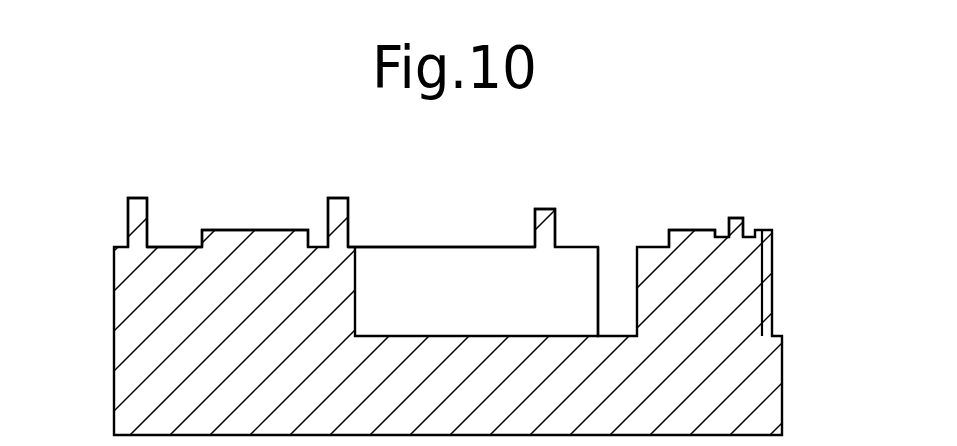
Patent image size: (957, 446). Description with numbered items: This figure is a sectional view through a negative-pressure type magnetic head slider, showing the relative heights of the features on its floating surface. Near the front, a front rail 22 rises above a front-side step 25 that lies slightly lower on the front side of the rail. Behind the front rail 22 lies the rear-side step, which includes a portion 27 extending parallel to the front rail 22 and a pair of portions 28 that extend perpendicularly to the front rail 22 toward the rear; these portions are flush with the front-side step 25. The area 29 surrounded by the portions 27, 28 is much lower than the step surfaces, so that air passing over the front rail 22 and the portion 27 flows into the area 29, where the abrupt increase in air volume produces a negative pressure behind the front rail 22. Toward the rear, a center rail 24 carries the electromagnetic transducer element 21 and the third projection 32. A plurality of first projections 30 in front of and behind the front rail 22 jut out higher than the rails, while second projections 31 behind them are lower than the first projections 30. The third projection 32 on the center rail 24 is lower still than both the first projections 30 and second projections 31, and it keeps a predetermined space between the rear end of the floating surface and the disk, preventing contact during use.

The electromagnetic transducer element 21 is at (773, 270).
The front rail 22 is at (252, 229).
The center rail 24 is at (688, 230).
The front-side step 25 is at (183, 246).
The portion of rear-side step extending parallel to front rail 27 is at (351, 247).
The portions of rear-side step extending perpendicularly to front rail 28 is at (493, 262).
The area surrounded by step portions 29 is at (437, 353).
The first projections 30 is at (137, 199).
The second projections 31 is at (545, 212).
The third projection 32 is at (735, 217).